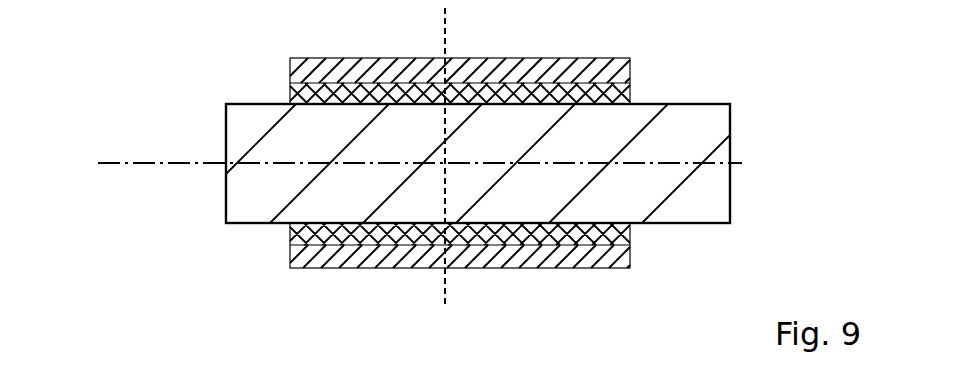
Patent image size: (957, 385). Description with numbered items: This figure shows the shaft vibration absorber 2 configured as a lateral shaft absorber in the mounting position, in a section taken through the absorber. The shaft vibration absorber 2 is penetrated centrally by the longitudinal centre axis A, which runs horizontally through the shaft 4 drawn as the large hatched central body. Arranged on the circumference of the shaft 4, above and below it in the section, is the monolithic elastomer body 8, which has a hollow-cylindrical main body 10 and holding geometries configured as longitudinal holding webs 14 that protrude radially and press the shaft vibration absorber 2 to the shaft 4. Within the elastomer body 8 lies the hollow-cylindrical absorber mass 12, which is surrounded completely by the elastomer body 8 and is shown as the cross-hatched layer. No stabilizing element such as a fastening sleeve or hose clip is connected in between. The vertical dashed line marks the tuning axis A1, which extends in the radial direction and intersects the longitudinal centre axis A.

The shaft vibration absorber 2 is at (276, 270).
The shaft 4 is at (242, 223).
The elastomer body 8 is at (292, 60).
The hollow-cylindrical main body 10 is at (300, 64).
The absorber mass 12 is at (292, 80).
The longitudinal holding web 14 is at (292, 98).
The longitudinal centre axis A is at (140, 163).
The tuning axis A1 is at (442, 30).